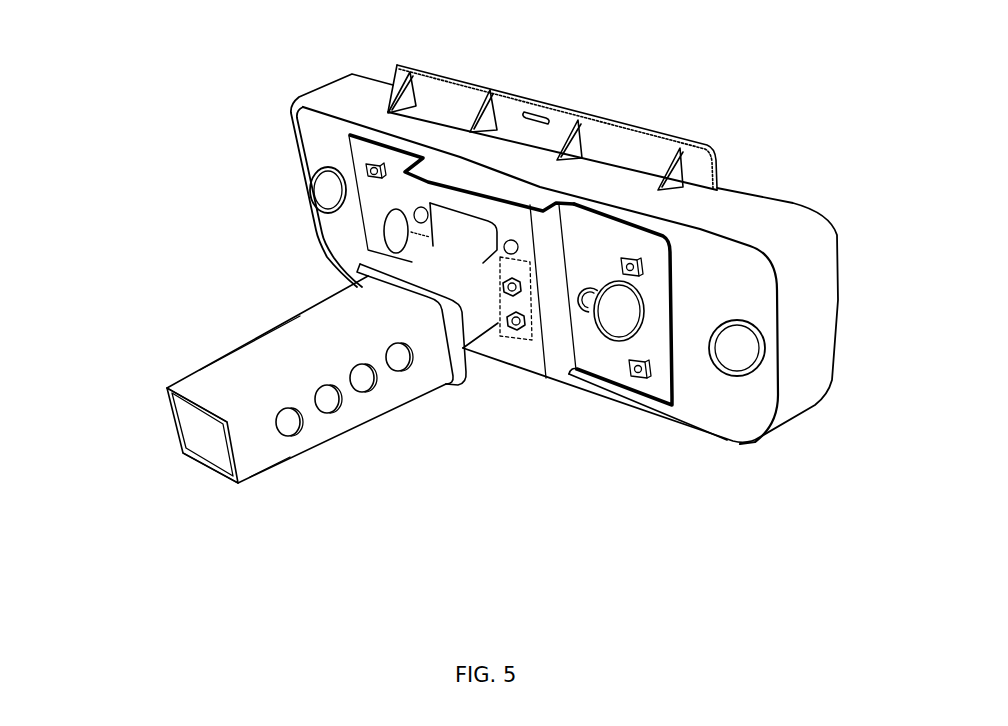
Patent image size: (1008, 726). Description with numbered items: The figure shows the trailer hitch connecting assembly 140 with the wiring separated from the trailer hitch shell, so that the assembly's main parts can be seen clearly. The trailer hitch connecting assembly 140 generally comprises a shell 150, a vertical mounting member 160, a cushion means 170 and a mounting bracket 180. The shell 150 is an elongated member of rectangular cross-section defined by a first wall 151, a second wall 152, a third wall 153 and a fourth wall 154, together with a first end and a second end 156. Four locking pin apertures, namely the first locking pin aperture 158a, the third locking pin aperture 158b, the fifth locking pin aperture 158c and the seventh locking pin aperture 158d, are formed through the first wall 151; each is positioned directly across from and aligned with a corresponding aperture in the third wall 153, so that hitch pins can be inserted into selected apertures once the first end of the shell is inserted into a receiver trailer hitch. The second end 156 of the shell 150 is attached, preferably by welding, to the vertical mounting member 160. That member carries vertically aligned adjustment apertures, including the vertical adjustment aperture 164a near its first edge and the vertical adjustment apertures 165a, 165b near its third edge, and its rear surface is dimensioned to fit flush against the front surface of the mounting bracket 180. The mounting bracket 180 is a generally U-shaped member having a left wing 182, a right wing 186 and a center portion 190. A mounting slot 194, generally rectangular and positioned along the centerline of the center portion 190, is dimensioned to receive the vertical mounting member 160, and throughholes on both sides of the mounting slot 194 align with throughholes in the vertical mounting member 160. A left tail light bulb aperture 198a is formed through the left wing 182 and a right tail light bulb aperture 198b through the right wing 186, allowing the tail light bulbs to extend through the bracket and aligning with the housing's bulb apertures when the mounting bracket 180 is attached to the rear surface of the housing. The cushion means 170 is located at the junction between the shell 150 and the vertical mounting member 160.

The trailer hitch connecting assembly 140 is at (266, 287).
The shell 150 is at (265, 468).
The first wall 151 is at (263, 450).
The second wall 152 is at (213, 477).
The third wall 153 is at (173, 432).
The fourth wall 154 is at (223, 370).
The second end 156 is at (220, 430).
The first locking pin aperture 158a is at (300, 426).
The third locking pin aperture 158b is at (339, 407).
The fifth locking pin aperture 158c is at (374, 389).
The seventh locking pin aperture 158d is at (408, 370).
The vertical mounting member 160 is at (560, 372).
The vertical adjustment aperture 164a is at (390, 268).
The vertical adjustment aperture 165a is at (523, 290).
The vertical adjustment aperture 165b is at (513, 333).
The cushion means 170 is at (465, 362).
The mounting bracket 180 is at (674, 401).
The left wing 182 is at (291, 124).
The right wing 186 is at (660, 357).
The center portion 190 is at (413, 233).
The mounting slot 194 is at (463, 223).
The left tail light bulb aperture 198a is at (620, 310).
The right tail light bulb aperture 198b is at (371, 252).